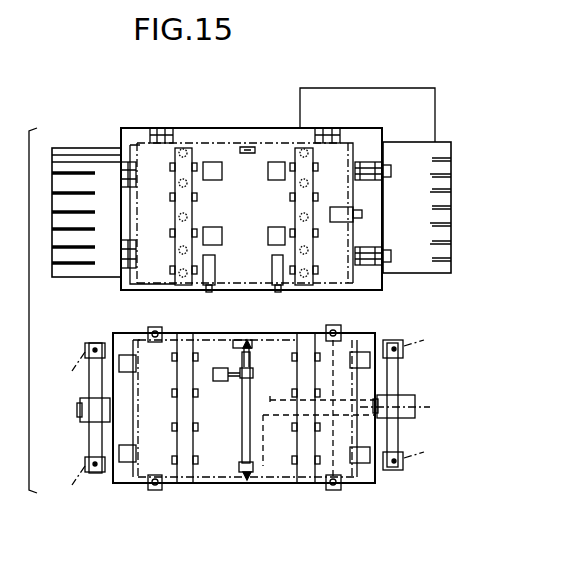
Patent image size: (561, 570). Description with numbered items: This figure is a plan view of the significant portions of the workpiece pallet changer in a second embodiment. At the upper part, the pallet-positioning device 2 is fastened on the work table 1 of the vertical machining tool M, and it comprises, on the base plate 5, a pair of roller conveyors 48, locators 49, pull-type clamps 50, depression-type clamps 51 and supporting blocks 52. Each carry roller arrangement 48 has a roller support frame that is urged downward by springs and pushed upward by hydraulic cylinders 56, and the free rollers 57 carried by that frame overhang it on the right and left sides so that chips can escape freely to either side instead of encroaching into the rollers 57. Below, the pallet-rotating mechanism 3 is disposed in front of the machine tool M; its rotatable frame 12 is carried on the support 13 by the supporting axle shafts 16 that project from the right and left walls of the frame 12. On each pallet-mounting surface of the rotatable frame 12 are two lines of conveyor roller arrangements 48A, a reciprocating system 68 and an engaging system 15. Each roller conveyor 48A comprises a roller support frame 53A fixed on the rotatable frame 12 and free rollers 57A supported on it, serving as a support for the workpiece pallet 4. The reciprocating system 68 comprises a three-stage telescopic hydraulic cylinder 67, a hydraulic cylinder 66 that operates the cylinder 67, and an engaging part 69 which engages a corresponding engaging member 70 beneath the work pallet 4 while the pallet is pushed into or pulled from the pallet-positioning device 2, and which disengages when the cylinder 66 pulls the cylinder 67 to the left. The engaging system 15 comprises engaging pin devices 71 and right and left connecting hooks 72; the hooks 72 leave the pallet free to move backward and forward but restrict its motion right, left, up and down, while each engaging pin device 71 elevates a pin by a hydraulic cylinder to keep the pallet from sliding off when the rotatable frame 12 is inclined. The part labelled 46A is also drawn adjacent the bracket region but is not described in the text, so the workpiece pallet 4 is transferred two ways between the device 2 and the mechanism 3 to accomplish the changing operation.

The work table 1 is at (100, 147).
The pallet-positioning device 2 is at (232, 129).
The pallet-rotating mechanism 3 is at (206, 334).
The workpiece pallet 4 is at (188, 138).
The base plate 5 is at (363, 135).
The vertical machining tool M is at (406, 85).
The rotatable frame 12 is at (113, 472).
The support 13 is at (92, 442).
The engaging system 15 is at (392, 536).
The supporting axle shaft 16 is at (410, 395).
The bracket cap 46A is at (392, 341).
The roller conveyor 48 is at (194, 222).
The conveyor roller arrangement 48A is at (140, 447).
The locator 49 is at (120, 176).
The pull-type clamp 50 is at (216, 269).
The depression-type clamp 51 is at (362, 268).
The supporting block 52 is at (222, 171).
The roller support frame 53A is at (177, 443).
The hydraulic cylinder 56 is at (307, 173).
The free roller 57 is at (173, 198).
The free roller 57A is at (172, 357).
The hydraulic cylinder 66 is at (221, 384).
The three-stage telescopic hydraulic cylinder 67 is at (247, 432).
The reciprocating system 68 is at (267, 529).
The engaging part 69 is at (247, 339).
The engaging member 70 is at (252, 344).
The engaging pin device 71 is at (331, 491).
The connecting hook 72 is at (358, 464).